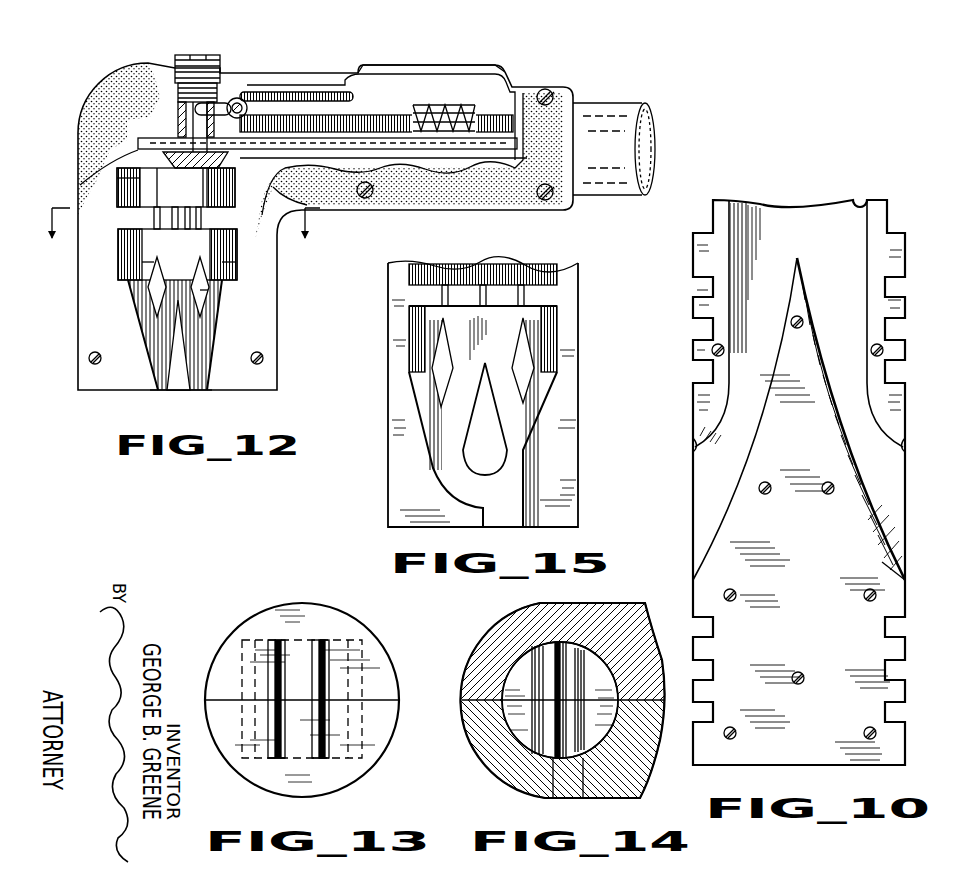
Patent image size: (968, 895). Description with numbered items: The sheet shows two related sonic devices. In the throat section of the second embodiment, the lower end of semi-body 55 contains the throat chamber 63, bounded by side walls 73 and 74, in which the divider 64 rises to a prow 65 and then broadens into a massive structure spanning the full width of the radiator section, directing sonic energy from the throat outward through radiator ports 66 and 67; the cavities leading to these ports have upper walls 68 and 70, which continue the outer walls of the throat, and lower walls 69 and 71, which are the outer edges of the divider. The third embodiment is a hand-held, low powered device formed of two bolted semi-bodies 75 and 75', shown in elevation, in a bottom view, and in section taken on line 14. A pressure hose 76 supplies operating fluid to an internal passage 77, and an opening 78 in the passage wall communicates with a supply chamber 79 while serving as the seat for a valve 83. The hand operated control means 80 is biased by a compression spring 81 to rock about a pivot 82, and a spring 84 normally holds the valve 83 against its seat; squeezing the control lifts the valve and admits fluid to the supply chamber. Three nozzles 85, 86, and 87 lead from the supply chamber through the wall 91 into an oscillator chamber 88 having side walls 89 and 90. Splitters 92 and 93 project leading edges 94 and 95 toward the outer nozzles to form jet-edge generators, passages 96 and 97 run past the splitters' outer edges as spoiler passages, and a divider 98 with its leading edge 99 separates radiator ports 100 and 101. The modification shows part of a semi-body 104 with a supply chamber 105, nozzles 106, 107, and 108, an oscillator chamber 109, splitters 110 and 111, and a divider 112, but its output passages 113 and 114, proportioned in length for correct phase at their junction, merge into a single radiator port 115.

In FIG. 12, the section line 14 is at (179, 239).
In FIG. 10, the semi-body 55 is at (890, 232).
In FIG. 10, the throat chamber 63 is at (798, 229).
In FIG. 10, the divider 64 is at (785, 532).
In FIG. 10, the prow 65 is at (802, 293).
In FIG. 10, the radiator port 66 is at (712, 481).
In FIG. 10, the radiator port 67 is at (886, 481).
In FIG. 10, the upper wall 68 is at (691, 447).
In FIG. 10, the lower wall 69 is at (713, 562).
In FIG. 10, the upper wall 70 is at (907, 447).
In FIG. 10, the lower wall 71 is at (893, 566).
In FIG. 10, the side wall 73 is at (733, 215).
In FIG. 10, the side wall 74 is at (860, 198).
In FIG. 12, the semi-body 75 is at (325, 210).
In FIG. 13, the semi-body 75 is at (299, 700).
In FIG. 14, the semi-body 75 is at (562, 693).
In FIG. 12, the semi-body 75' is at (311, 149).
In FIG. 13, the semi-body 75' is at (293, 683).
In FIG. 14, the semi-body 75' is at (529, 744).
In FIG. 12, the pressure hose 76 is at (648, 166).
In FIG. 12, the internal passage 77 is at (348, 138).
In FIG. 12, the opening 78 is at (138, 152).
In FIG. 12, the supply chamber 79 is at (135, 180).
In FIG. 14, the supply chamber 79 is at (503, 684).
In FIG. 12, the hand operated control means 80 is at (410, 68).
In FIG. 12, the compression spring 81 is at (445, 106).
In FIG. 12, the pivot 82 is at (237, 98).
In FIG. 12, the valve 83 is at (195, 160).
In FIG. 12, the spring 84 is at (190, 100).
In FIG. 12, the nozzle 85 is at (190, 228).
In FIG. 14, the nozzle 85 is at (540, 648).
In FIG. 12, the nozzle 86 is at (153, 222).
In FIG. 14, the nozzle 86 is at (530, 666).
In FIG. 12, the nozzle 87 is at (225, 222).
In FIG. 14, the nozzle 87 is at (583, 799).
In FIG. 12, the oscillator chamber 88 is at (166, 265).
In FIG. 13, the oscillator chamber 88 is at (262, 668).
In FIG. 12, the side wall 89 is at (125, 262).
In FIG. 13, the side wall 89 is at (245, 700).
In FIG. 12, the side wall 90 is at (232, 270).
In FIG. 13, the side wall 90 is at (380, 693).
In FIG. 12, the wall 91 is at (224, 245).
In FIG. 12, the splitter 92 is at (152, 291).
In FIG. 13, the splitter 92 is at (280, 640).
In FIG. 12, the splitter 93 is at (201, 306).
In FIG. 13, the splitter 93 is at (326, 640).
In FIG. 12, the leading edge 94 is at (155, 272).
In FIG. 14, the leading edge 94 is at (530, 729).
In FIG. 12, the leading edge 95 is at (206, 291).
In FIG. 14, the leading edge 95 is at (578, 656).
In FIG. 12, the passage 96 is at (143, 313).
In FIG. 12, the passage 97 is at (215, 320).
In FIG. 12, the divider 98 is at (177, 393).
In FIG. 12, the leading edge 99 is at (181, 332).
In FIG. 14, the leading edge 99 is at (553, 799).
In FIG. 12, the radiator port 100 is at (158, 391).
In FIG. 13, the radiator port 100 is at (278, 759).
In FIG. 12, the radiator port 101 is at (207, 391).
In FIG. 13, the radiator port 101 is at (322, 759).
In FIG. 15, the semi-body 104 is at (384, 489).
In FIG. 15, the supply chamber 105 is at (463, 280).
In FIG. 15, the nozzle 106 is at (485, 296).
In FIG. 15, the nozzle 107 is at (441, 300).
In FIG. 15, the nozzle 108 is at (522, 296).
In FIG. 15, the oscillator chamber 109 is at (452, 340).
In FIG. 15, the splitter 110 is at (440, 369).
In FIG. 15, the splitter 111 is at (525, 366).
In FIG. 15, the divider 112 is at (478, 442).
In FIG. 15, the passage 113 is at (445, 455).
In FIG. 15, the passage 114 is at (515, 426).
In FIG. 15, the radiator port 115 is at (508, 526).